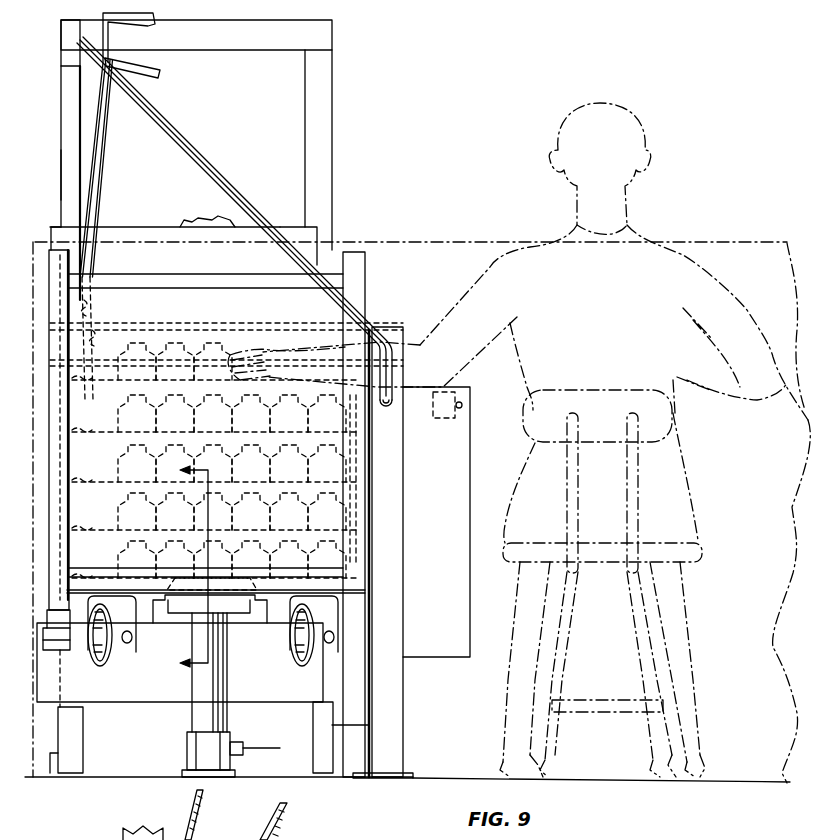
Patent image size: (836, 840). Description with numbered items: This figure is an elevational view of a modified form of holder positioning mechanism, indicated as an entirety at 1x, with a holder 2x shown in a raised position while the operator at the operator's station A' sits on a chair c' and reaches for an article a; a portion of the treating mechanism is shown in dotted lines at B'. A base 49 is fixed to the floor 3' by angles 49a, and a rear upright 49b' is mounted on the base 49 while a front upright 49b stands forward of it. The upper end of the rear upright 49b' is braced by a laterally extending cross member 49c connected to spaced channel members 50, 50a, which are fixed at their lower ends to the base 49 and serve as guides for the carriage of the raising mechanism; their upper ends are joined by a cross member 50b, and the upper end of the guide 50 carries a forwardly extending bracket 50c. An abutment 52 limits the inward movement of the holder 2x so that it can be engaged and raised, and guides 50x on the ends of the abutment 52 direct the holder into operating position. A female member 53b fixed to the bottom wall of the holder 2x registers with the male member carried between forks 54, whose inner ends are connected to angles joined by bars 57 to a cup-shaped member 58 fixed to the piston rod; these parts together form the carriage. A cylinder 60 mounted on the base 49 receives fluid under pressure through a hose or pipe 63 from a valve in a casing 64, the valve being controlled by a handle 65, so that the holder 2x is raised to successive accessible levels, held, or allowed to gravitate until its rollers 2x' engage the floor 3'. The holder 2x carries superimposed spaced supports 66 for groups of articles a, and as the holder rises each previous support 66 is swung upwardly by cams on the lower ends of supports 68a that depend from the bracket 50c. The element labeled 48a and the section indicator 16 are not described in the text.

The cross member 50b is at (333, 37).
The forwardly extending bracket 50c is at (61, 66).
The channel member 50 is at (78, 116).
The supports 68a is at (63, 174).
The supports 66 is at (100, 136).
The abutment 52 is at (146, 238).
The cup-shaped member 58 is at (200, 222).
The bars 57 is at (242, 240).
The diagonal support arm 48a is at (345, 304).
The cross member 49c is at (265, 328).
The rear upright 49b' is at (400, 514).
The handle 65 is at (462, 406).
The article a is at (190, 335).
The holder 2x is at (384, 543).
The female member 53b is at (238, 580).
The forks 54 is at (278, 612).
The rollers 2x' is at (213, 647).
The guides 50x is at (45, 684).
The section line 16 is at (182, 566).
The cylinder 60 is at (226, 705).
The positioning mechanism 1x is at (58, 743).
The hose or pipe 63 is at (246, 752).
The channel member 50a is at (323, 754).
The angles 49a is at (32, 778).
The base 49 is at (355, 778).
The front upright 49b is at (415, 552).
The casing 64 is at (447, 650).
The operator's station A' is at (457, 741).
The treating mechanism B' is at (519, 443).
The chair c' is at (612, 583).
The floor 3' is at (601, 762).